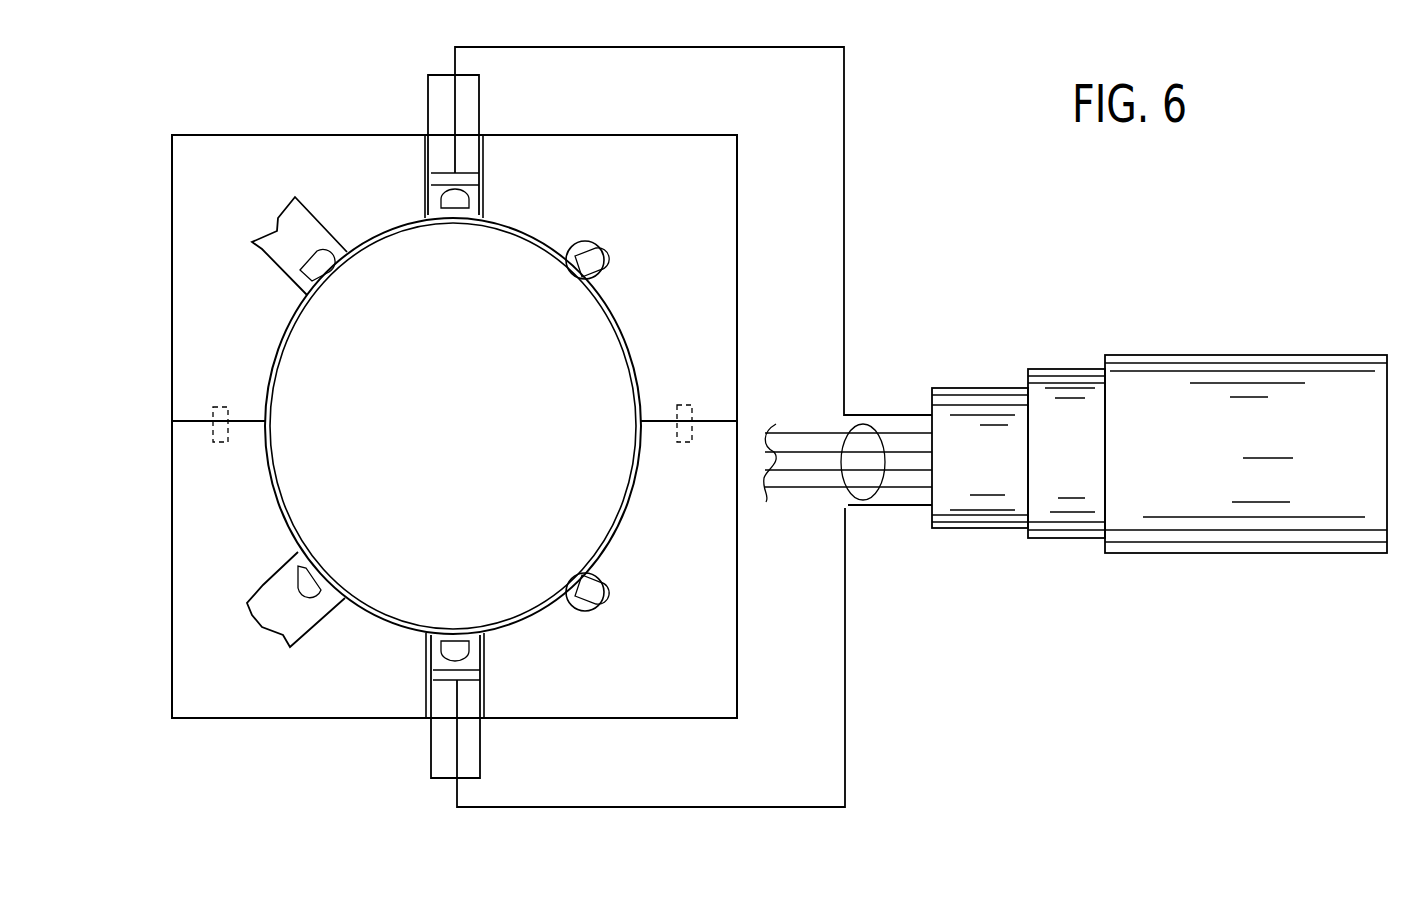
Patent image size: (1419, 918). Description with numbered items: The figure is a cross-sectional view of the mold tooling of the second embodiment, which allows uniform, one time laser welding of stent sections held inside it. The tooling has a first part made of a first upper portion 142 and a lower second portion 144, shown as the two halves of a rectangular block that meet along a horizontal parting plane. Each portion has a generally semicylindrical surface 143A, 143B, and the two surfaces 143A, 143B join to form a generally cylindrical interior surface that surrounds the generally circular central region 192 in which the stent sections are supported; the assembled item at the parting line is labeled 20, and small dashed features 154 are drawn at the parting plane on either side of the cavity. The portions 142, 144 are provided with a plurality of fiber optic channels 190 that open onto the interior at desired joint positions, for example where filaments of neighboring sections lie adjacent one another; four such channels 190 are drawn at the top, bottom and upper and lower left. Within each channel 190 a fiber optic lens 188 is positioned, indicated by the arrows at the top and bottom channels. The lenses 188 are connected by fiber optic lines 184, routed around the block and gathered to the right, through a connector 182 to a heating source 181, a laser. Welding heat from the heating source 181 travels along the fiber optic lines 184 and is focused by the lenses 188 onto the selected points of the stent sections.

The electrode assembly 20 is at (302, 267).
The first upper portion 142 is at (665, 157).
The semicylindrical surface 143A is at (640, 355).
The semicylindrical surface 143B is at (627, 518).
The lower second portion 144 is at (217, 702).
The alignment pins 154 is at (213, 442).
The heating source 181 is at (1246, 454).
The cable connector 182 is at (990, 385).
The fiber optic lines 184 is at (843, 100).
The fiber optic lens 188 is at (436, 157).
The fiber optic channels 190 is at (428, 142).
The electrode plate 192 is at (302, 378).